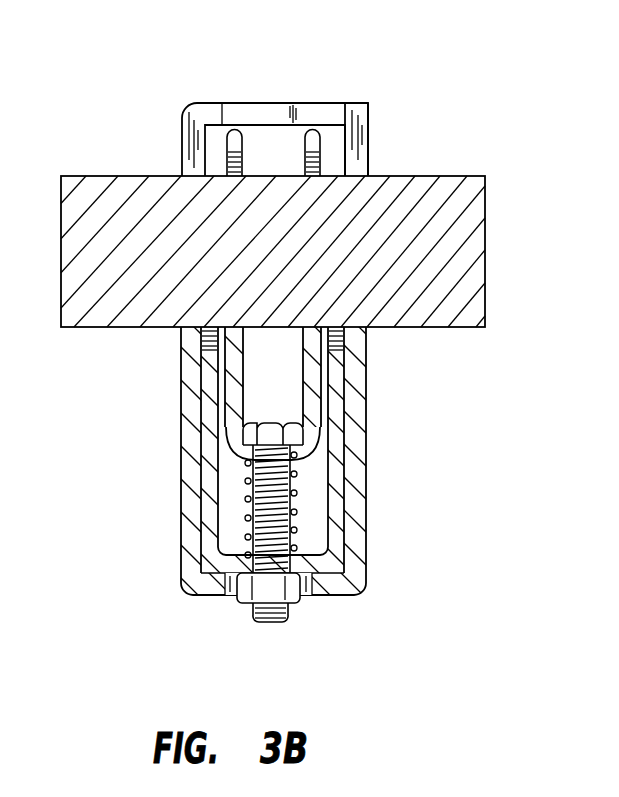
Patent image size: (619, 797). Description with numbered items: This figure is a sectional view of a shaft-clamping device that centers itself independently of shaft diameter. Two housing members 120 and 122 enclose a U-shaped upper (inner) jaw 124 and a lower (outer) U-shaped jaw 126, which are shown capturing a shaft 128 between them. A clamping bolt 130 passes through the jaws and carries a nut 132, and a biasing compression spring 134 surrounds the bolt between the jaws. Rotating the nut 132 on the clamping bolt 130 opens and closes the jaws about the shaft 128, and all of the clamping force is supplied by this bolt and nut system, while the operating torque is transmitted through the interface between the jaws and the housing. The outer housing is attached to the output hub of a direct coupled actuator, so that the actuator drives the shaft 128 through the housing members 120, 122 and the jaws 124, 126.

The housing member 120 is at (192, 104).
The housing member 122 is at (372, 127).
The U-shaped upper (inner) jaw 124 is at (232, 137).
The lower (outer) U-shaped jaw 126 is at (211, 488).
The shaft 128 is at (472, 210).
The clamping bolt 130 is at (318, 434).
The nut 132 is at (243, 603).
The biasing compression spring 134 is at (287, 495).